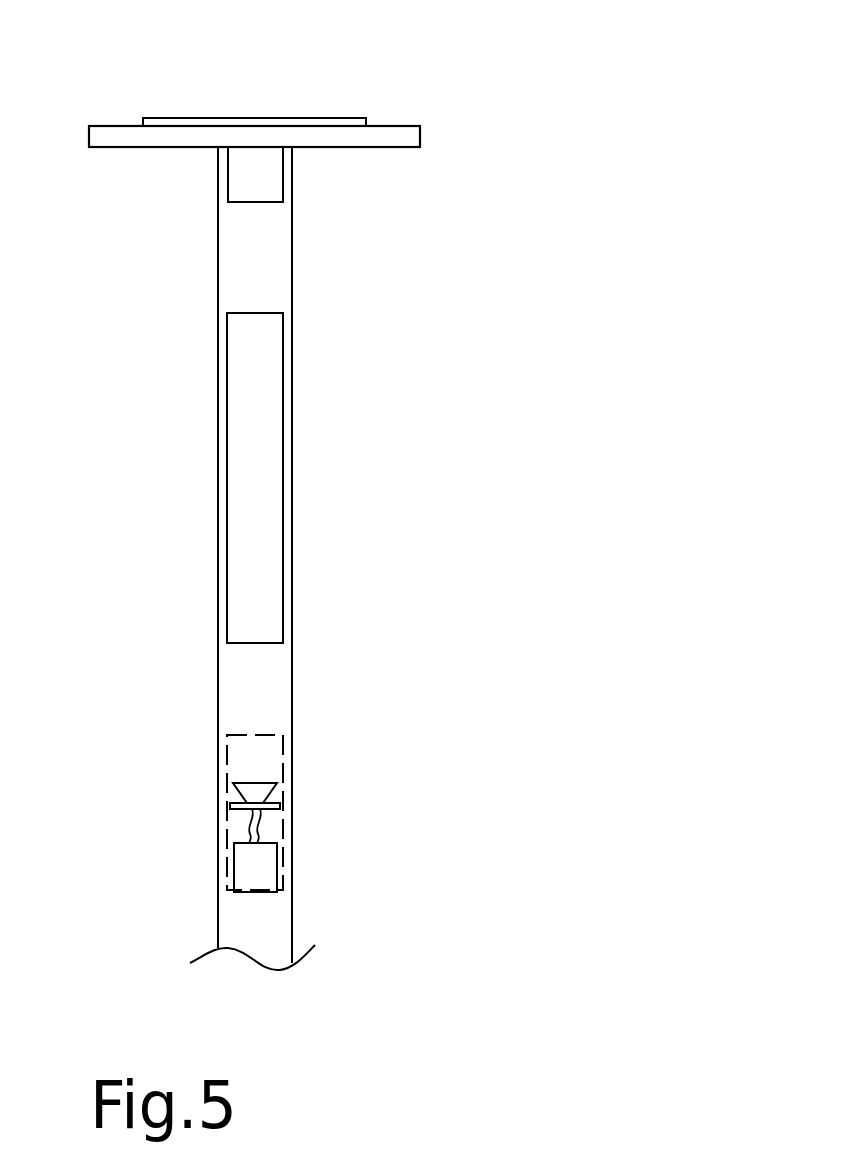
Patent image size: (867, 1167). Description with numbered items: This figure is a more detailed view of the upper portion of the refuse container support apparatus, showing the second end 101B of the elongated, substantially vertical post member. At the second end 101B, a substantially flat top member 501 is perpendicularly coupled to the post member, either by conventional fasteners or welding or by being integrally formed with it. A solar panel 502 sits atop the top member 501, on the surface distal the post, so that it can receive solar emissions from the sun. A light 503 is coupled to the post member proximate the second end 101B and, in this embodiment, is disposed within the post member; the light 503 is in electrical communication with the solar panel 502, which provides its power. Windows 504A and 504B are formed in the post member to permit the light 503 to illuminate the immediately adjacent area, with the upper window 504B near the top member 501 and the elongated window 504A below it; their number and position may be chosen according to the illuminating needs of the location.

The second end 101B is at (222, 173).
The top member 501 is at (411, 137).
The solar panel 502 is at (359, 118).
The window 504B is at (270, 188).
The window 504A is at (263, 423).
The light 503 is at (255, 863).